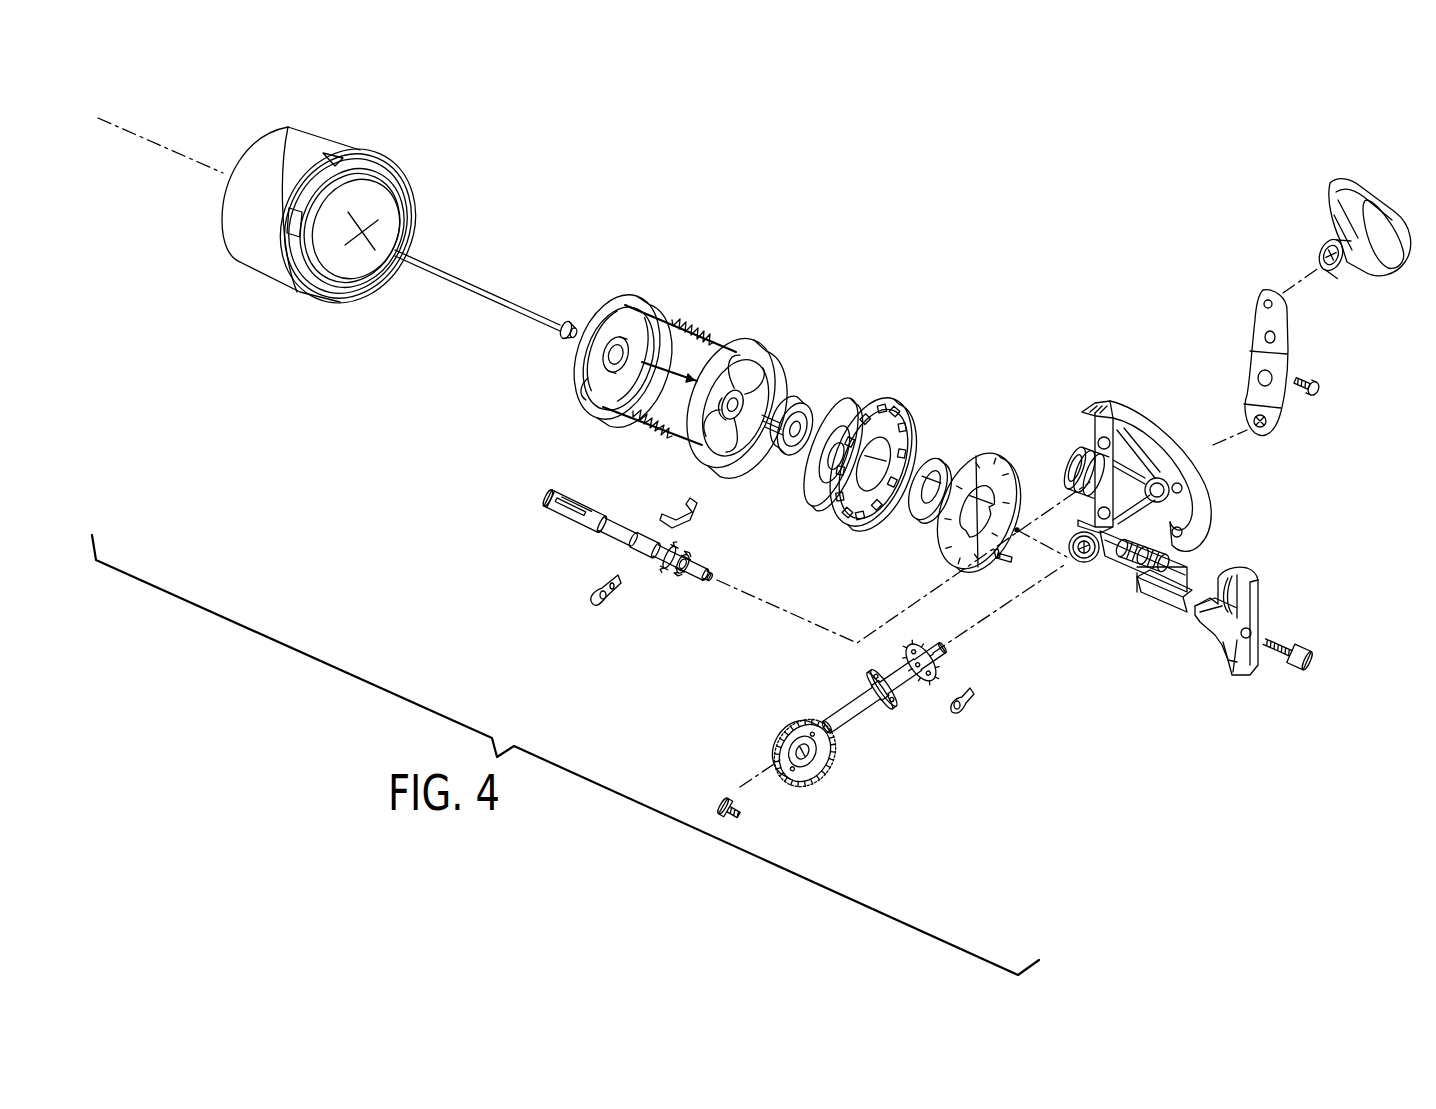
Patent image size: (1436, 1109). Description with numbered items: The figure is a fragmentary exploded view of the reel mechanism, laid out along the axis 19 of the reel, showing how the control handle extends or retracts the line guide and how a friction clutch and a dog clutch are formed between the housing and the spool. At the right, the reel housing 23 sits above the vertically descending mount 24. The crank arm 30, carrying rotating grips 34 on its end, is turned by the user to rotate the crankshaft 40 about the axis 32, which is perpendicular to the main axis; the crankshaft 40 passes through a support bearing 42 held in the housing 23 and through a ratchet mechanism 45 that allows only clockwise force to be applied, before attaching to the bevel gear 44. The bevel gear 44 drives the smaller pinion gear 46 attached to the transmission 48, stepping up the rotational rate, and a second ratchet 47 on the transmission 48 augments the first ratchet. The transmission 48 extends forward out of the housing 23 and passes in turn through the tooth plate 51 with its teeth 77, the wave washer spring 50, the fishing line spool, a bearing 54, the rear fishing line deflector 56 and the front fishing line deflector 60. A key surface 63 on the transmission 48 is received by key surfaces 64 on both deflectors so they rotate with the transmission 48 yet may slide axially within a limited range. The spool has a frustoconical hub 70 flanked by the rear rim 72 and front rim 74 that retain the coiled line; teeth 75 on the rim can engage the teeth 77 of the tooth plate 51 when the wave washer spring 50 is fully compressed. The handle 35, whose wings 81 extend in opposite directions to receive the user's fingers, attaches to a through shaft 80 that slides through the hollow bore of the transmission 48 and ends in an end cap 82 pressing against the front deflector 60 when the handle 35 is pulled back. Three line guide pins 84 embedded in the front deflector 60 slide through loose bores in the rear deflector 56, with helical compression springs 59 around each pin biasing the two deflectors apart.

The axis 19 is at (158, 144).
The reel housing 23 is at (1133, 433).
The vertically descending mount 24 is at (1187, 567).
The crank arm 30 is at (343, 140).
The axis 32 is at (1213, 447).
The rotating grips 34 is at (1350, 198).
The handle 35 is at (1235, 653).
The crankshaft 40 is at (893, 706).
The support bearing 42 is at (1078, 560).
The bevel gear 44 is at (825, 777).
The ratchet mechanism 45 is at (953, 700).
The pinion gear 46 is at (683, 564).
The second ratchet 47 is at (669, 557).
The transmission 48 is at (612, 537).
The wave washer spring 50 is at (920, 510).
The tooth plate 51 is at (1005, 503).
The bearing 54 is at (800, 400).
The rear fishing line deflector 56 is at (750, 343).
The helical compression springs 59 is at (700, 320).
The front fishing line deflector 60 is at (620, 303).
The key surface 63 is at (570, 508).
The key surfaces 64 is at (588, 385).
The hub 70 is at (886, 438).
The rear rim 72 is at (818, 483).
The front rim 74 is at (858, 505).
The teeth 75 is at (888, 408).
The teeth 77 is at (994, 496).
The through shaft 80 is at (487, 290).
The wings 81 is at (1243, 593).
The end cap 82 is at (562, 343).
The line guide pins 84 is at (648, 303).